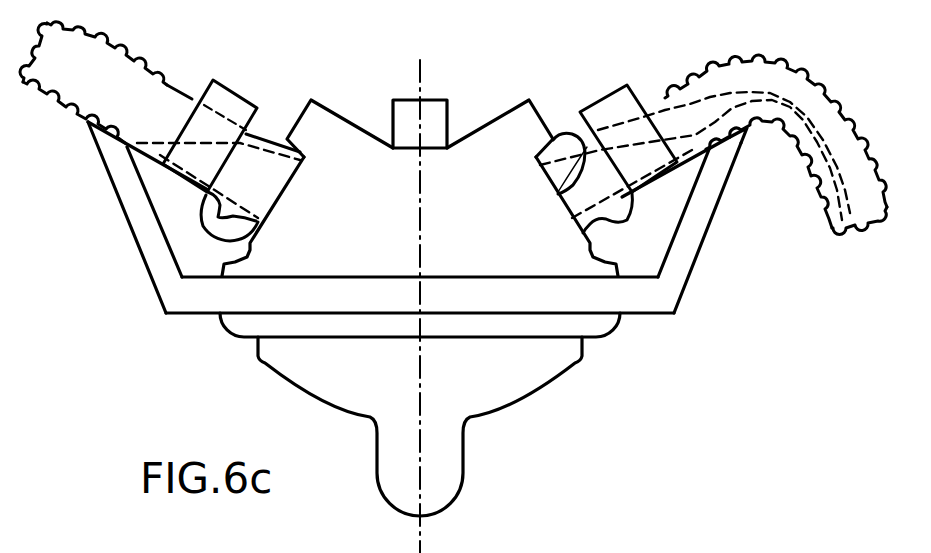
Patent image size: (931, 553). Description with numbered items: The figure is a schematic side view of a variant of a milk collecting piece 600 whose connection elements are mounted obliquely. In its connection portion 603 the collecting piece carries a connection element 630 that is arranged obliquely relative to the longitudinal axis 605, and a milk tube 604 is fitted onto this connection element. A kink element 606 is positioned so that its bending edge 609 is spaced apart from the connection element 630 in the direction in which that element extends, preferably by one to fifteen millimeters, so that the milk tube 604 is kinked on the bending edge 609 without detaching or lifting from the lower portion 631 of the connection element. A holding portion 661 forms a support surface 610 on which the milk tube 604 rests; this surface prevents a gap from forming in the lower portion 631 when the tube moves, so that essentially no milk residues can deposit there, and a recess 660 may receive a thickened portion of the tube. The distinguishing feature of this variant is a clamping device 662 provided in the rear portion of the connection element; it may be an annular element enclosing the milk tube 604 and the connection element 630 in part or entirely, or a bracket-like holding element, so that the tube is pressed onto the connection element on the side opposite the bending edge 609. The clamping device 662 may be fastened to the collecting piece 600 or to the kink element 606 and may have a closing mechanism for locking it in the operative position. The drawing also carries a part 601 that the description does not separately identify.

The milk collecting piece 600 is at (464, 58).
The holder body 601 is at (500, 140).
The connection portion 603 is at (547, 138).
The milk tube 604 is at (867, 142).
The longitudinal axis 605 is at (418, 80).
The kink element 606 is at (710, 250).
The bending edge 609 is at (751, 129).
The support surface 610 is at (665, 240).
The connection element 630 is at (662, 137).
The lower portion 631 is at (687, 160).
The recess 660 is at (220, 217).
The holding portion 661 is at (170, 209).
The clamping device 662 is at (235, 94).